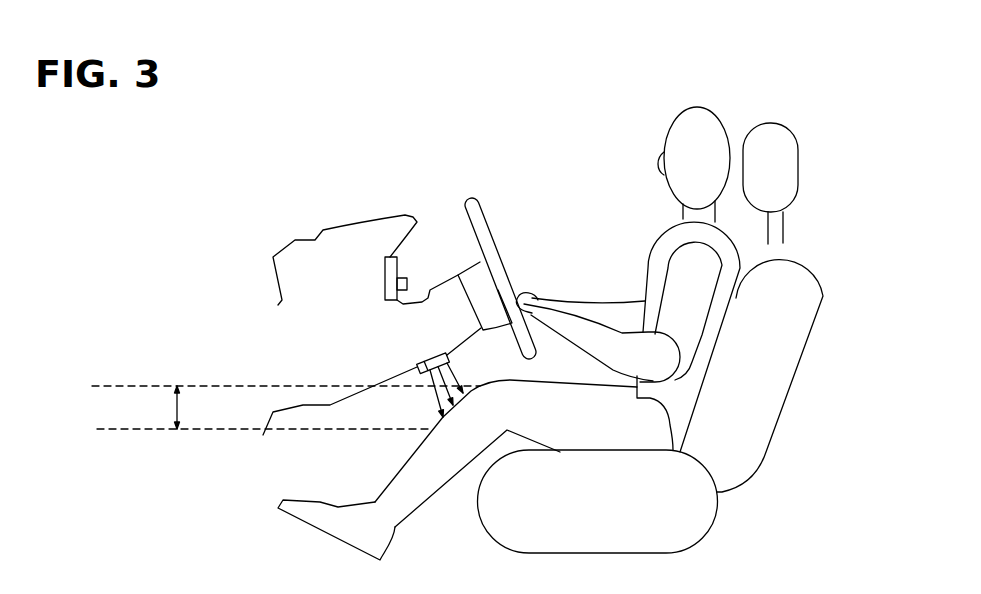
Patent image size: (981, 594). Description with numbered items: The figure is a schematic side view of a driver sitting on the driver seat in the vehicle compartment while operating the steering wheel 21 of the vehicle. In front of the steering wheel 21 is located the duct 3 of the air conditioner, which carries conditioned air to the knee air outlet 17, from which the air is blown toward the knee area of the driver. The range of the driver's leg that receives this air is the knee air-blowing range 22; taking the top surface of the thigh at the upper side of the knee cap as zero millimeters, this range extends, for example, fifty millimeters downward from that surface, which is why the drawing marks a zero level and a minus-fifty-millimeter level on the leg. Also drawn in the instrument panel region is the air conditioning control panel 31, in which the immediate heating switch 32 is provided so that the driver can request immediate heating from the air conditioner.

The duct 3 is at (290, 255).
The knee air outlet 17 is at (423, 364).
The steering wheel 21 is at (477, 217).
The knee air-blowing range 22 is at (174, 410).
The air conditioning control panel 31 is at (386, 279).
The immediate heating switch 32 is at (408, 284).